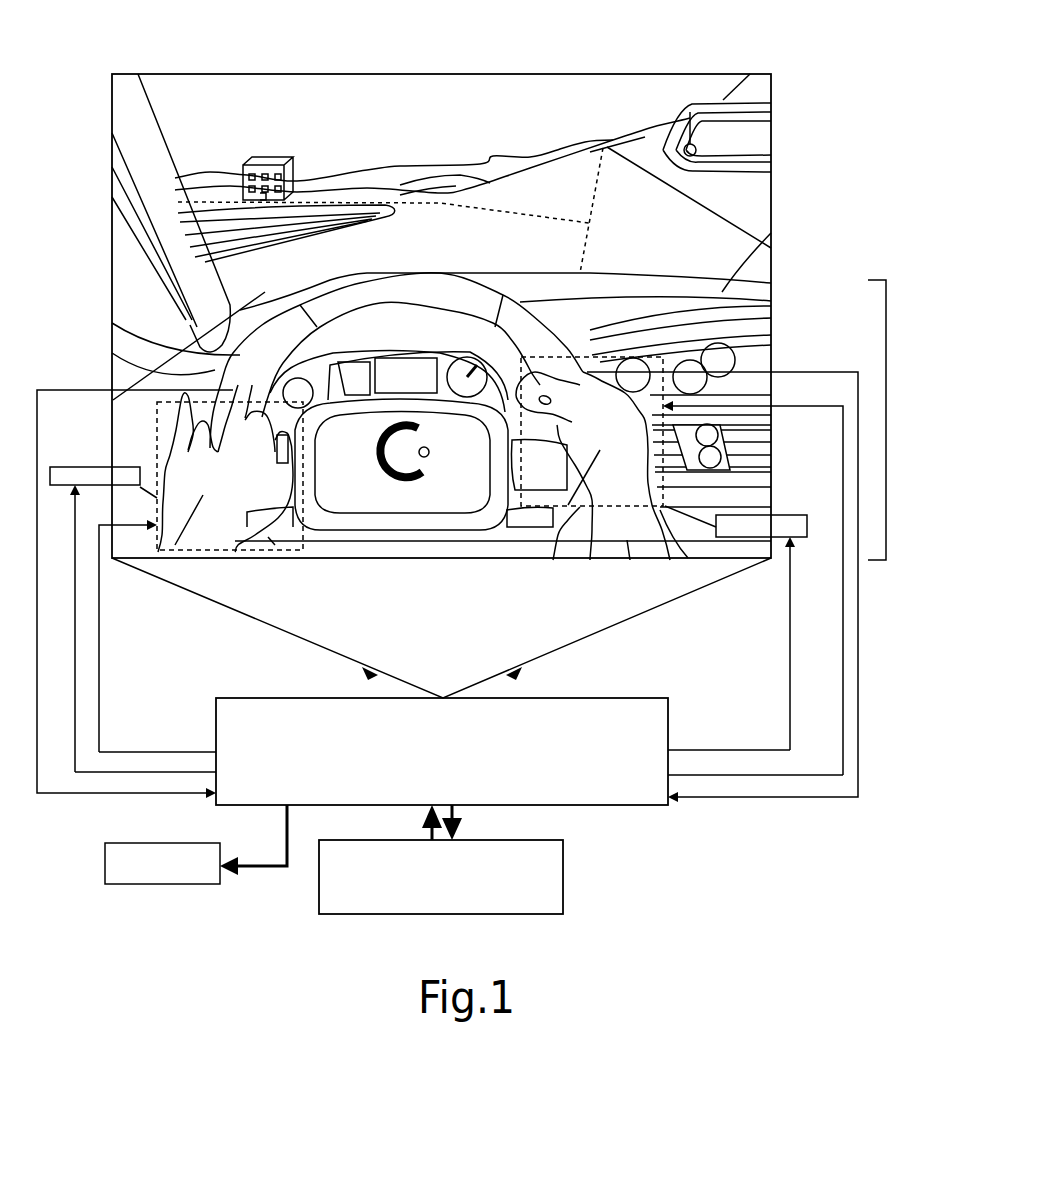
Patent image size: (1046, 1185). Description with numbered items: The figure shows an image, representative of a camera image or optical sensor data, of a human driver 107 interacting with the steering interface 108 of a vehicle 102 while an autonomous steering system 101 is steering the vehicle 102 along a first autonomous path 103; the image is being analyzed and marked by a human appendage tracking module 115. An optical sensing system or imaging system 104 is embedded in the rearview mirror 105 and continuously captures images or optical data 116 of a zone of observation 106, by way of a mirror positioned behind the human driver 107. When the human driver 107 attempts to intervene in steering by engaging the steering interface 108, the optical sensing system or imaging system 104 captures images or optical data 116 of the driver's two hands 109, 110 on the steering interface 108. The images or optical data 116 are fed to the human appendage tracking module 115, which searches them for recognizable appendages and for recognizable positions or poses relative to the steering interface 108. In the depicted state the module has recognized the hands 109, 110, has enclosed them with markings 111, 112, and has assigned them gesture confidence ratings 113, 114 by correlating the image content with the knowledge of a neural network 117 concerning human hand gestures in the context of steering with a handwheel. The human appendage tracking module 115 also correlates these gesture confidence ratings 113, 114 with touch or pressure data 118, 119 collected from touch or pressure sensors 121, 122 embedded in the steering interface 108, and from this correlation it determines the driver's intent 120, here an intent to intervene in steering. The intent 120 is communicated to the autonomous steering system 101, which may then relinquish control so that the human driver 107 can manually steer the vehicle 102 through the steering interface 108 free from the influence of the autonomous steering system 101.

The autonomous steering system 101 is at (886, 415).
The vehicle 102 is at (722, 292).
The first autonomous path 103 is at (597, 175).
The optical sensing system or imaging system 104 is at (691, 144).
The rearview mirror 105 is at (748, 145).
The zone of observation 106 is at (176, 63).
The human driver 107 is at (628, 560).
The steering interface 108 is at (232, 392).
The hand 109 is at (550, 560).
The hand 110 is at (165, 510).
The marking 111 is at (690, 560).
The marking 112 is at (268, 546).
The gesture confidence rating 113 is at (783, 515).
The gesture confidence rating 114 is at (85, 467).
The human appendage tracking module 115 is at (632, 810).
The images or optical data 116 is at (272, 630).
The neural network 117 is at (565, 880).
The touch or pressure data 118 is at (815, 372).
The touch or pressure data 119 is at (70, 391).
The intent 120 is at (172, 885).
The touch or pressure sensor 121 is at (220, 385).
The touch or pressure sensor 122 is at (583, 372).